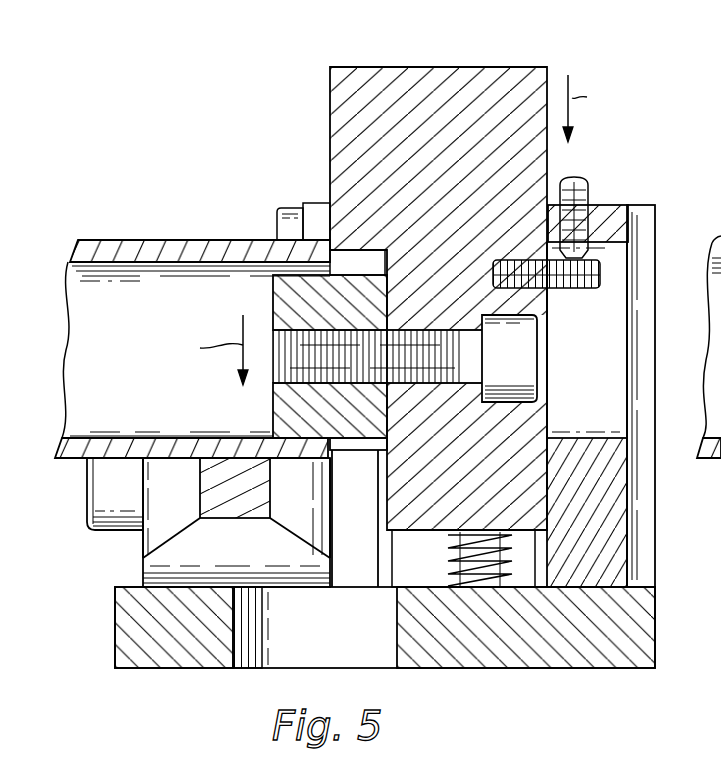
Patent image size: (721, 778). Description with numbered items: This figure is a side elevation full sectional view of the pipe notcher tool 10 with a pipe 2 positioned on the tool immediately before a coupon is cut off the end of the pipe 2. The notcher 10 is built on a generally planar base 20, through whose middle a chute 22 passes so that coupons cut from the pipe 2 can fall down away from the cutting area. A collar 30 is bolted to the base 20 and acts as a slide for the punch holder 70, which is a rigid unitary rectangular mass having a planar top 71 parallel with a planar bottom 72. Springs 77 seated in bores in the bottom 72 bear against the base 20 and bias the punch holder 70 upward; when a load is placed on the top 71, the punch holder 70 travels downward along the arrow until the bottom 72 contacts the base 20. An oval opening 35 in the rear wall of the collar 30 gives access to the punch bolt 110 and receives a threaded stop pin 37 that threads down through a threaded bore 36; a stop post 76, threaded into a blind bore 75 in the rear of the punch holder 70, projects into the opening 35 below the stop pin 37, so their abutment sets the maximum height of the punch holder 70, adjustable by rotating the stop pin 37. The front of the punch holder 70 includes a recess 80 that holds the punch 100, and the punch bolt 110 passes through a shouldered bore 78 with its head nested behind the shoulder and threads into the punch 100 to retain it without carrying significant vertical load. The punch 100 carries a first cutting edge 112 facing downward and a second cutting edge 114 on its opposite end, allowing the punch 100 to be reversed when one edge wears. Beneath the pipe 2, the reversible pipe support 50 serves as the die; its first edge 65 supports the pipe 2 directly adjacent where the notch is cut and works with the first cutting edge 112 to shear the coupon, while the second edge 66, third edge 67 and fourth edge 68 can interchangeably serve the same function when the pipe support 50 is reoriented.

The pipe notcher tool 10 is at (388, 365).
The pipe 2 is at (388, 323).
The base 20 is at (385, 649).
The chute 22 is at (312, 634).
The collar 30 is at (672, 396).
The opening 35 is at (600, 417).
The threaded bore 36 is at (595, 211).
The stop pin 37 is at (601, 204).
The pipe support 50 is at (196, 522).
The first edge 65 is at (301, 508).
The second edge 66 is at (170, 508).
The third edge 67 is at (293, 540).
The fourth edge 68 is at (185, 540).
The punch holder 70 is at (415, 274).
The top 71 is at (438, 274).
The bottom 72 is at (370, 512).
The blind bore 75 is at (431, 335).
The stop post 76 is at (555, 288).
The springs 77 is at (463, 558).
The shouldered bore 78 is at (577, 340).
The recess 80 is at (333, 209).
The punch 100 is at (272, 299).
The punch bolt 110 is at (528, 362).
The first cutting edge 112 is at (288, 410).
The second cutting edge 114 is at (267, 230).